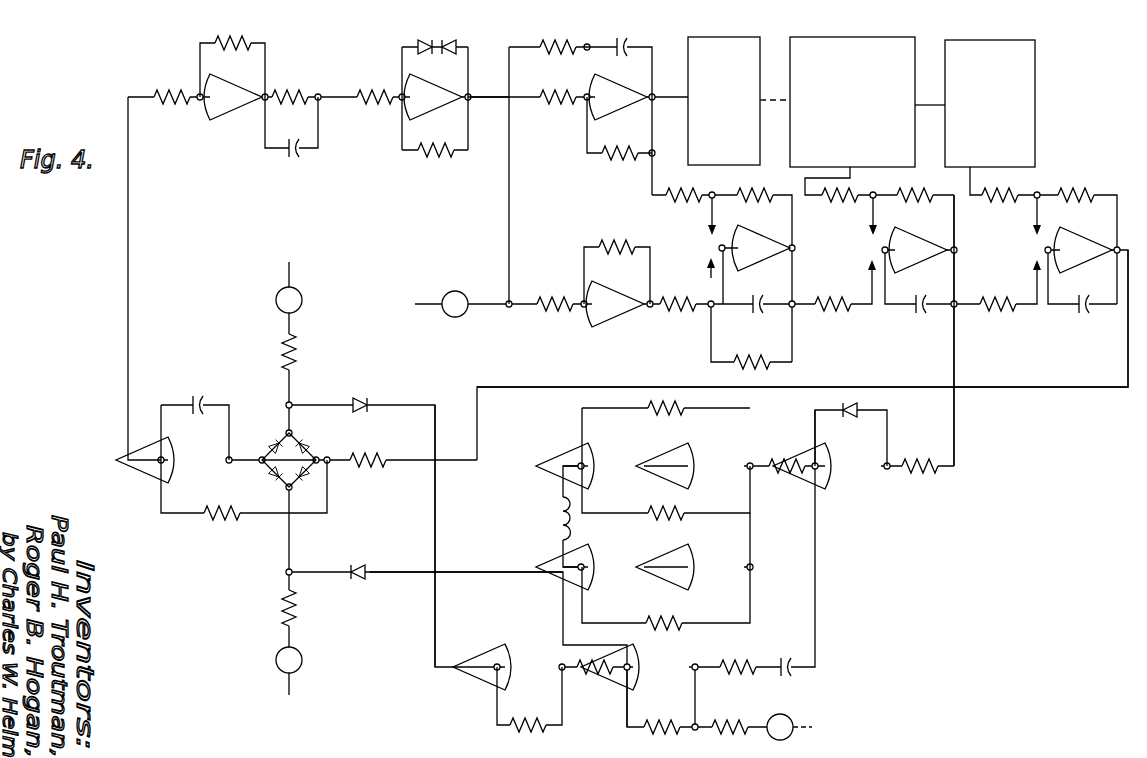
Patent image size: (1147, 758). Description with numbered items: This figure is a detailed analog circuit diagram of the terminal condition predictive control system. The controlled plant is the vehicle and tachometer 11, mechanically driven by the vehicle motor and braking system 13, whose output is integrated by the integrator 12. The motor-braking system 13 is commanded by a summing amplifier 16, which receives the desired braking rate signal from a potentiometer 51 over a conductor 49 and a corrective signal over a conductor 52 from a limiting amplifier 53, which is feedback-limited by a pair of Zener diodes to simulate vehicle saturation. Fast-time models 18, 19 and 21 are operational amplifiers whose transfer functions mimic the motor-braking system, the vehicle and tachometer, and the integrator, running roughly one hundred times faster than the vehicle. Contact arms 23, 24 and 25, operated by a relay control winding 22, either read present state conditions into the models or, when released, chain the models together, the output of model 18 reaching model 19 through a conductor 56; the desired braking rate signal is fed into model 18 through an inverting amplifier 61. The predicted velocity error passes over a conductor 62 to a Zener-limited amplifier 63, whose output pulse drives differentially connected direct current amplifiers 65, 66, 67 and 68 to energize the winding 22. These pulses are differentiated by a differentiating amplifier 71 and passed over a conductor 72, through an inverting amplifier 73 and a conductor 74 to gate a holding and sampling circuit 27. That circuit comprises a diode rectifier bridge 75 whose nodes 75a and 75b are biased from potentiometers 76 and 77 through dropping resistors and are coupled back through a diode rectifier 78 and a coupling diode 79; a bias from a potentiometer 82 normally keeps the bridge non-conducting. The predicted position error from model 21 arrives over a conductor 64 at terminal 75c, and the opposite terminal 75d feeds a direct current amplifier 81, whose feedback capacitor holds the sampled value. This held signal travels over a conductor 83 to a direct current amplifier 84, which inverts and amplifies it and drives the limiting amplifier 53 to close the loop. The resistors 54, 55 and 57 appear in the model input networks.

The vehicle and tachometer 11 is at (905, 38).
The integrator 12 is at (1030, 42).
The vehicle motor and braking system 13 is at (700, 40).
The summing amplifier 16 is at (643, 82).
The fast-time model 18 is at (780, 231).
The fast-time model 19 is at (945, 235).
The fast-time model 21 is at (1105, 233).
The relay control winding 22 is at (558, 520).
The contact arm 23 is at (718, 248).
The contact arm 24 is at (870, 258).
The contact arm 25 is at (1035, 260).
The holding and sampling circuit 27 is at (311, 446).
The conductor 49 is at (509, 190).
The potentiometer 51 is at (458, 312).
The conductor 52 is at (495, 103).
The limiting amplifier 53 is at (440, 95).
The resistor 54 is at (836, 200).
The resistor 55 is at (970, 184).
The conductor 56 is at (865, 308).
The resistor 57 is at (1031, 308).
The inverting amplifier 61 is at (615, 297).
The conductor 62 is at (954, 433).
The limiting amplifier 63 is at (862, 494).
The conductor 64 is at (1084, 390).
The direct current amplifier 65 is at (718, 485).
The direct current amplifier 66 is at (620, 485).
The direct current amplifier 67 is at (716, 590).
The direct current amplifier 68 is at (615, 590).
The differentiating amplifier 71 is at (683, 660).
The conductor 72 is at (404, 580).
The inverting amplifier 73 is at (540, 654).
The conductor 74 is at (435, 500).
The diode rectifier bridge 75 is at (275, 445).
The terminal or node 75a is at (286, 430).
The terminal or node 75b is at (297, 481).
The terminal 75c is at (320, 462).
The terminal 75d is at (274, 479).
The potentiometer 76 is at (302, 303).
The potentiometer 77 is at (302, 661).
The diode rectifier 78 is at (361, 400).
The coupling diode 79 is at (361, 567).
The direct current amplifier 81 is at (196, 453).
The potentiometer 82 is at (790, 720).
The conductor 83 is at (128, 270).
The direct current amplifier 84 is at (232, 108).